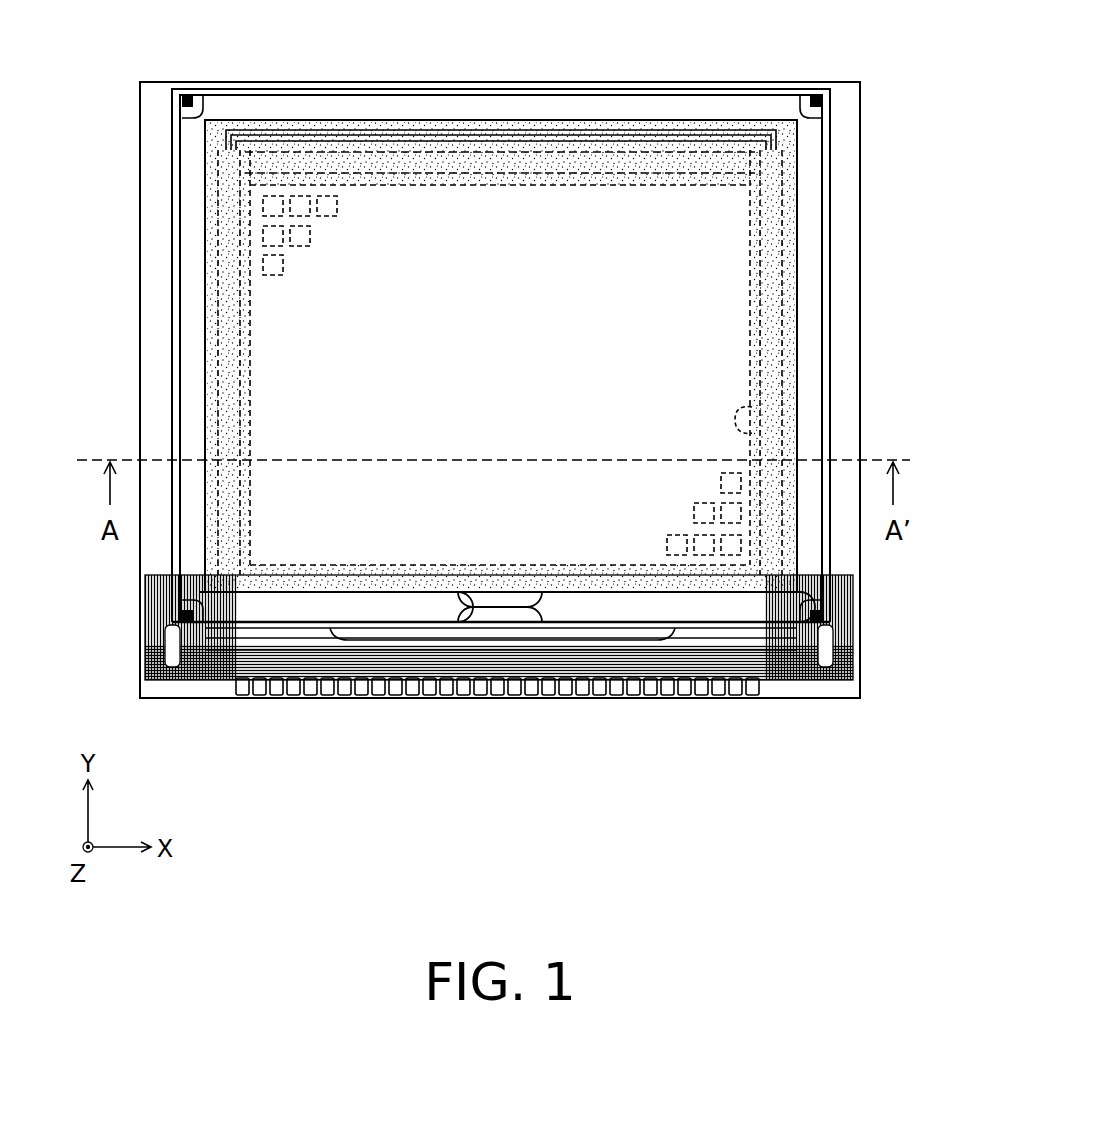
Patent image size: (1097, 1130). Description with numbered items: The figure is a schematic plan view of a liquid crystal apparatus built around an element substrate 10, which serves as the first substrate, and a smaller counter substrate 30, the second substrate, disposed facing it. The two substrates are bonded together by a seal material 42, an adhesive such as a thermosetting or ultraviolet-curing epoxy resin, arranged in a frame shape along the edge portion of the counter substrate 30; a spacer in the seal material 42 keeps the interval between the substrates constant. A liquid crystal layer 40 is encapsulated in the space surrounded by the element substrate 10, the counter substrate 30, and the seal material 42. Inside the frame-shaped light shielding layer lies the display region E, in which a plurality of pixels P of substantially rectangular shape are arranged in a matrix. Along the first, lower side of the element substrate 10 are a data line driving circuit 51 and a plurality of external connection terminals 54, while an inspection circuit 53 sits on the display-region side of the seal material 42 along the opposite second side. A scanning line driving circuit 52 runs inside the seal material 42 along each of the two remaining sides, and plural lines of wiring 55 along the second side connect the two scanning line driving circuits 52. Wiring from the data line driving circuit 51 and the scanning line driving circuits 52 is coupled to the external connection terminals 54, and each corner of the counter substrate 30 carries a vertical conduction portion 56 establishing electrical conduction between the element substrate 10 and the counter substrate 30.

The element substrate 10 is at (279, 82).
The counter substrate 30 is at (398, 90).
The liquid crystal layer 40 is at (712, 320).
The seal material 42 is at (810, 345).
The data line driving circuit 51 is at (230, 637).
The scanning line driving circuit 52 is at (232, 326).
The inspection circuit 53 is at (605, 160).
The external connection terminal 54 is at (345, 697).
The wiring 55 is at (510, 128).
The vertical conduction portion 56 is at (180, 100).
The pixel P is at (338, 212).
The display region E is at (795, 410).